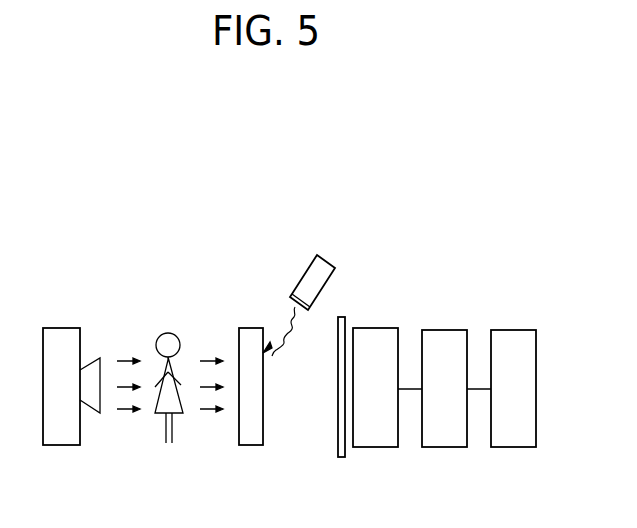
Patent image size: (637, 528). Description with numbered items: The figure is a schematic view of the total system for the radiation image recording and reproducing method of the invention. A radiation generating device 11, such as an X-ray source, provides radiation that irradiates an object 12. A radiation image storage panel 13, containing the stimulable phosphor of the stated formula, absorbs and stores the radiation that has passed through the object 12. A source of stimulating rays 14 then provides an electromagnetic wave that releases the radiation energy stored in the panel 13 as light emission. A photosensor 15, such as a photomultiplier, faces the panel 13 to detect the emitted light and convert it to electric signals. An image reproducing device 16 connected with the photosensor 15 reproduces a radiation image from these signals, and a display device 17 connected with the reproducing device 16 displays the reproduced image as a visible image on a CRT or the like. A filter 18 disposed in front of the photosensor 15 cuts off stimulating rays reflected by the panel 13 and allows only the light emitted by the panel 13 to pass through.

The radiation generating device 11 is at (62, 445).
The object 12 is at (167, 440).
The radiation image storage panel 13 is at (252, 445).
The source of stimulating rays 14 is at (333, 267).
The photosensor 15 is at (378, 447).
The image reproducing device 16 is at (448, 447).
The display device 17 is at (518, 447).
The filter 18 is at (333, 447).